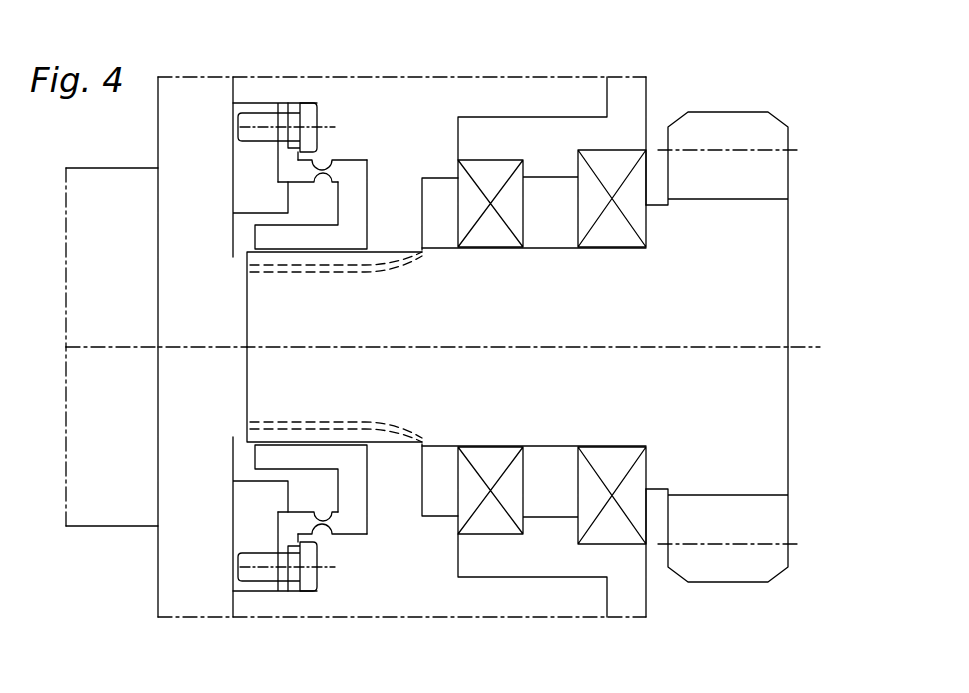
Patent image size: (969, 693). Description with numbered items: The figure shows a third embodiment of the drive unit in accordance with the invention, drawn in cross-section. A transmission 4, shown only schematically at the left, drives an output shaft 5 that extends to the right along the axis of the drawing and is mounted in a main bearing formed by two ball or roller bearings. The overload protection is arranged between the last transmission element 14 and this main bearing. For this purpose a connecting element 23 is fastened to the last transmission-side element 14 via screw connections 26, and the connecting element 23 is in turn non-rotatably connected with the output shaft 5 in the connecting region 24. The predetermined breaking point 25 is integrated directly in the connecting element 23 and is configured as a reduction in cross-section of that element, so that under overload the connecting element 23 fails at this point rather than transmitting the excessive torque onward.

The transmission 4 is at (173, 542).
The output shaft 5 is at (770, 313).
The last transmission element 14 is at (250, 168).
The connecting element 23 is at (357, 183).
The connecting region 24 is at (292, 262).
The predetermined breaking point 25 is at (320, 152).
The screw connections 26 is at (275, 128).